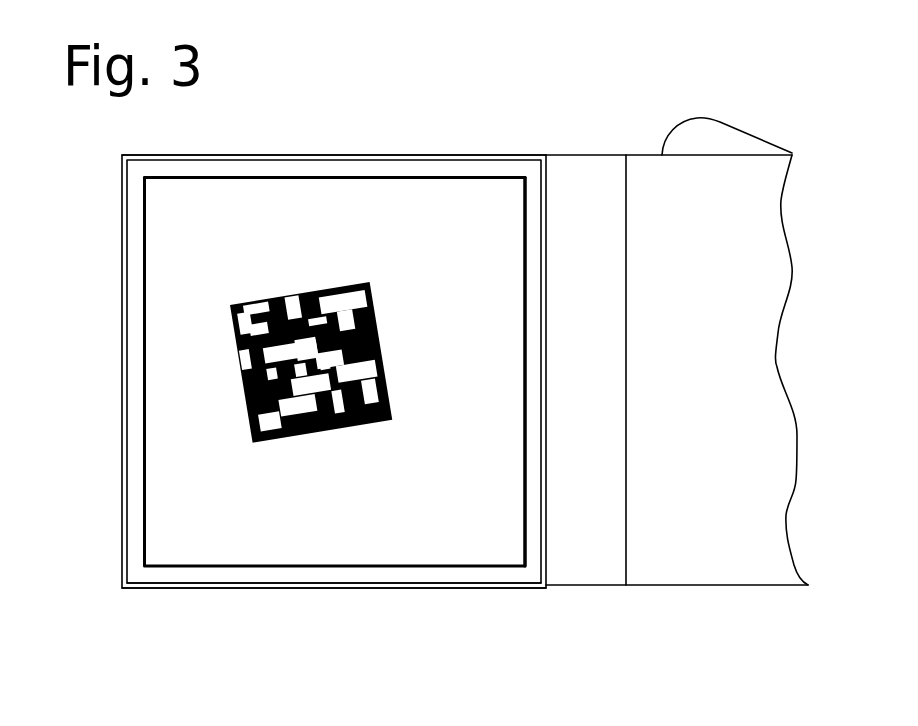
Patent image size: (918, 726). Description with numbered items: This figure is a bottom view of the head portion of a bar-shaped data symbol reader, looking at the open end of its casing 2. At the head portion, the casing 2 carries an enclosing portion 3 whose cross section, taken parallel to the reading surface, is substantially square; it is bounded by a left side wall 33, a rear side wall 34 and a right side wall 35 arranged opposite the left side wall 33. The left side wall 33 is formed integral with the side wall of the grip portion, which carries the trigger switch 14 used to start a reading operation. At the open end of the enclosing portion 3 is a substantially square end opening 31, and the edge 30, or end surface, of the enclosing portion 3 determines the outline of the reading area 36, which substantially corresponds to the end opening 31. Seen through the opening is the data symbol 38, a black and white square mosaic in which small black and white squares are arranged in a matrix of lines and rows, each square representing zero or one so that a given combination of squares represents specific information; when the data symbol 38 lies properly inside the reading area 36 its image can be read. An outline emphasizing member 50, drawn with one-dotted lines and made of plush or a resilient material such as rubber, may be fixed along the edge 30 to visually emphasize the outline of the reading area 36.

The casing 2 is at (647, 137).
The enclosing portion 3 is at (267, 604).
The trigger switch 14 is at (710, 135).
The edge 30 is at (128, 327).
The end opening 31 is at (177, 527).
The left side wall 33 is at (325, 163).
The rear side wall 34 is at (523, 330).
The right side wall 35 is at (188, 580).
The reading area 36 is at (413, 212).
The data symbol 38 is at (243, 402).
The outline emphasizing member 50 is at (342, 588).